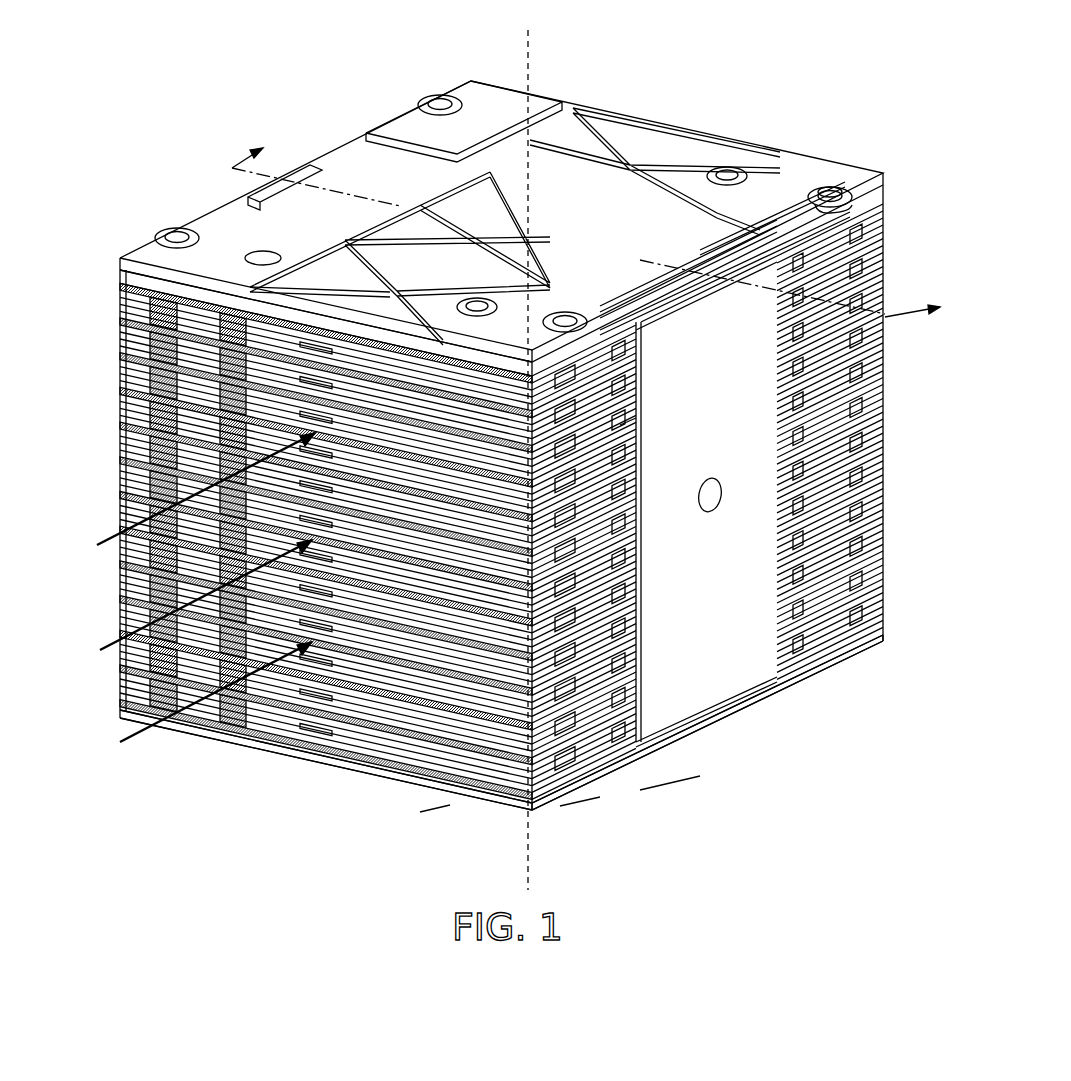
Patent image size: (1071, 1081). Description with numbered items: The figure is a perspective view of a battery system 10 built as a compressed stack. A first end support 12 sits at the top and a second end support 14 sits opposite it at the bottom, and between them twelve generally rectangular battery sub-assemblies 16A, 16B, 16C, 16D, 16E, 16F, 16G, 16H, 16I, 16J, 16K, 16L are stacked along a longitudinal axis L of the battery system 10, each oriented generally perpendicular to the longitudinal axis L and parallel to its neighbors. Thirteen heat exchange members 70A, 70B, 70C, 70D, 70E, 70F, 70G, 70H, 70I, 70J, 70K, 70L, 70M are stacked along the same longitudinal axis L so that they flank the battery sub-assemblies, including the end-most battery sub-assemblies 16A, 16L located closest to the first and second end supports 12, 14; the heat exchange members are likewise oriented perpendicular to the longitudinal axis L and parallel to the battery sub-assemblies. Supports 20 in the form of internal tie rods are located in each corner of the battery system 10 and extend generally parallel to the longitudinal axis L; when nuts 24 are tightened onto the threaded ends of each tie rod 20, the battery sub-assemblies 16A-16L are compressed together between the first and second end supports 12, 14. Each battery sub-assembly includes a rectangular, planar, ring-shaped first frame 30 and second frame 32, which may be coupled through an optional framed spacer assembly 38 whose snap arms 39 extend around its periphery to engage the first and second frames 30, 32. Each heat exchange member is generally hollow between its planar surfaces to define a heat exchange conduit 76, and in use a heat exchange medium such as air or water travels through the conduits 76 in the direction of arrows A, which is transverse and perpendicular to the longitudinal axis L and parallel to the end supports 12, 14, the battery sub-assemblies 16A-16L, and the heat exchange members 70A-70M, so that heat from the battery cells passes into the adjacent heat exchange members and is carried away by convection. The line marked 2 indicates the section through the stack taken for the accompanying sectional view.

The battery system 10 is at (783, 84).
The first end support 12 is at (470, 92).
The second end support 14 is at (300, 755).
The battery sub-assembly 16A is at (120, 304).
The battery sub-assembly 16B is at (120, 339).
The battery sub-assembly 16C is at (120, 374).
The battery sub-assembly 16D is at (120, 408).
The battery sub-assembly 16E is at (120, 443).
The battery sub-assembly 16F is at (120, 478).
The battery sub-assembly 16G is at (120, 512).
The battery sub-assembly 16H is at (120, 547).
The battery sub-assembly 16I is at (120, 582).
The battery sub-assembly 16J is at (120, 616).
The battery sub-assembly 16K is at (120, 651).
The battery sub-assembly 16L is at (120, 686).
The support 20 is at (838, 187).
The nut 24 is at (852, 210).
The first frame 30 is at (632, 338).
The second frame 32 is at (641, 362).
The framed spacer assembly 38 is at (634, 350).
The snap arm 39 is at (622, 432).
The heat exchange member 70A is at (120, 287).
The heat exchange member 70B is at (120, 322).
The heat exchange member 70C is at (120, 356).
The heat exchange member 70D is at (120, 391).
The heat exchange member 70E is at (120, 426).
The heat exchange member 70F is at (120, 460).
The heat exchange member 70G is at (120, 495).
The heat exchange member 70H is at (120, 530).
The heat exchange member 70I is at (120, 564).
The heat exchange member 70J is at (120, 599).
The heat exchange member 70K is at (120, 634).
The heat exchange member 70L is at (120, 668).
The heat exchange member 70M is at (120, 703).
The conduit 76 is at (199, 297).
The arrows A is at (138, 738).
The longitudinal axis L is at (540, 66).
The section line 2 is at (596, 229).